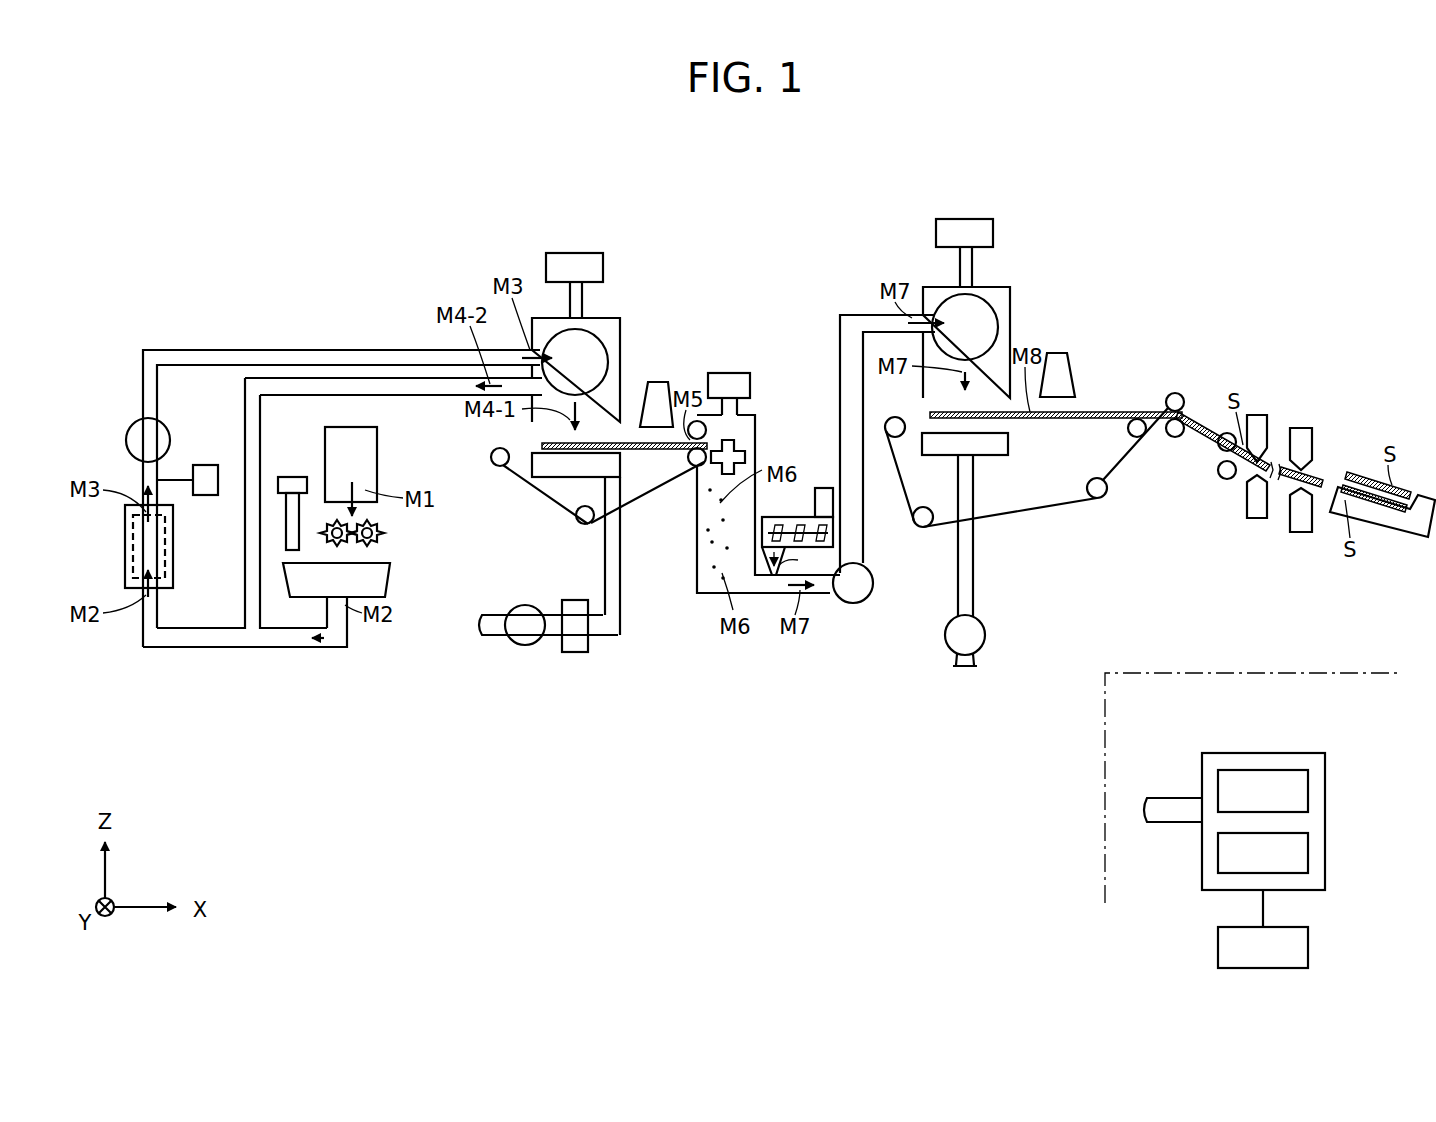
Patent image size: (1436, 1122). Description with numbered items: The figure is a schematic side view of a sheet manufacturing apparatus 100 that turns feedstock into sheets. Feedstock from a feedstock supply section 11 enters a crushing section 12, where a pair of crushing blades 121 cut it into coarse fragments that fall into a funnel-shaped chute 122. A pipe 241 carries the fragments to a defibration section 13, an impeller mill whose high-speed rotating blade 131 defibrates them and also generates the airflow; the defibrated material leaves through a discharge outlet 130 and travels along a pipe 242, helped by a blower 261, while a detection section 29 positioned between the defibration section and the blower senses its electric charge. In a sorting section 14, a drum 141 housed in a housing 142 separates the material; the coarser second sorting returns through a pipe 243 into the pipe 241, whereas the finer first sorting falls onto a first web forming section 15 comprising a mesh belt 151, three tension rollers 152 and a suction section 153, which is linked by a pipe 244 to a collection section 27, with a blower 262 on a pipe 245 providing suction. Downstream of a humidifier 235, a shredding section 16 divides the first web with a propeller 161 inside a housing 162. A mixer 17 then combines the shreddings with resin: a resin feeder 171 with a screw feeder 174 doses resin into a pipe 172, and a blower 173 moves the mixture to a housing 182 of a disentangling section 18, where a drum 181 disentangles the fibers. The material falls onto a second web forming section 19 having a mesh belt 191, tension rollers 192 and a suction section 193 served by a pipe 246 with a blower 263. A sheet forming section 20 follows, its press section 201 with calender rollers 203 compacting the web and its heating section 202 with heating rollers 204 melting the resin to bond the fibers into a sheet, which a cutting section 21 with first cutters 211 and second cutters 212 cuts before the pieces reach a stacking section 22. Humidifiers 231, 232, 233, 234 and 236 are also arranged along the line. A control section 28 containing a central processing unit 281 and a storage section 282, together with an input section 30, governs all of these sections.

The sheet manufacturing apparatus 100 is at (1168, 180).
The feedstock supply section 11 is at (335, 427).
The crushing section 12 is at (377, 558).
The crushing blades 121 is at (342, 546).
The chute 122 is at (385, 585).
The defibration section 13 is at (125, 555).
The discharge outlet 130 is at (148, 510).
The rotating blade 131 is at (168, 550).
The sorting section 14 is at (619, 318).
The drum 141 is at (600, 348).
The housing 142 is at (612, 318).
The first web forming section 15 is at (582, 528).
The mesh belt 151 is at (644, 498).
The tension rollers 152 is at (496, 449).
The suction section 153 is at (620, 465).
The shredding section 16 is at (740, 494).
The propeller 161 is at (745, 452).
The housing 162 is at (708, 597).
The mixer 17 is at (846, 498).
The resin feeder 171 is at (808, 517).
The pipe 172 is at (868, 557).
The blower 173 is at (864, 603).
The screw feeder 174 is at (776, 520).
The disentangling section 18 is at (1000, 284).
The drum 181 is at (998, 310).
The housing 182 is at (1000, 287).
The second web forming section 19 is at (1027, 481).
The mesh belt 191 is at (1015, 512).
The tension rollers 192 is at (892, 418).
The suction section 193 is at (1010, 447).
The sheet forming section 20 is at (1198, 442).
The press section 201 is at (1175, 379).
The heating section 202 is at (1191, 498).
The calender rollers 203 is at (1225, 355).
The heating rollers 204 is at (1216, 460).
The cutting section 21 is at (1308, 429).
The first cutters 211 is at (1272, 409).
The second cutters 212 is at (1275, 362).
The stacking section 22 is at (1398, 525).
The humidifier 231 is at (292, 477).
The humidifier 232 is at (577, 253).
The humidifier 233 is at (731, 373).
The humidifier 234 is at (968, 219).
The humidifier 235 is at (660, 382).
The humidifier 236 is at (1057, 353).
The pipe 241 is at (297, 648).
The pipe 242 is at (172, 350).
The pipe 243 is at (365, 378).
The pipe 244 is at (620, 610).
The pipe 245 is at (552, 636).
The pipe 246 is at (975, 595).
The blower 261 is at (134, 421).
The blower 262 is at (515, 645).
The blower 263 is at (985, 628).
The collection section 27 is at (582, 652).
The control section 28 is at (1264, 811).
The central processing unit 281 is at (1308, 787).
The storage section 282 is at (1308, 852).
The detection section 29 is at (206, 465).
The input section 30 is at (1308, 948).